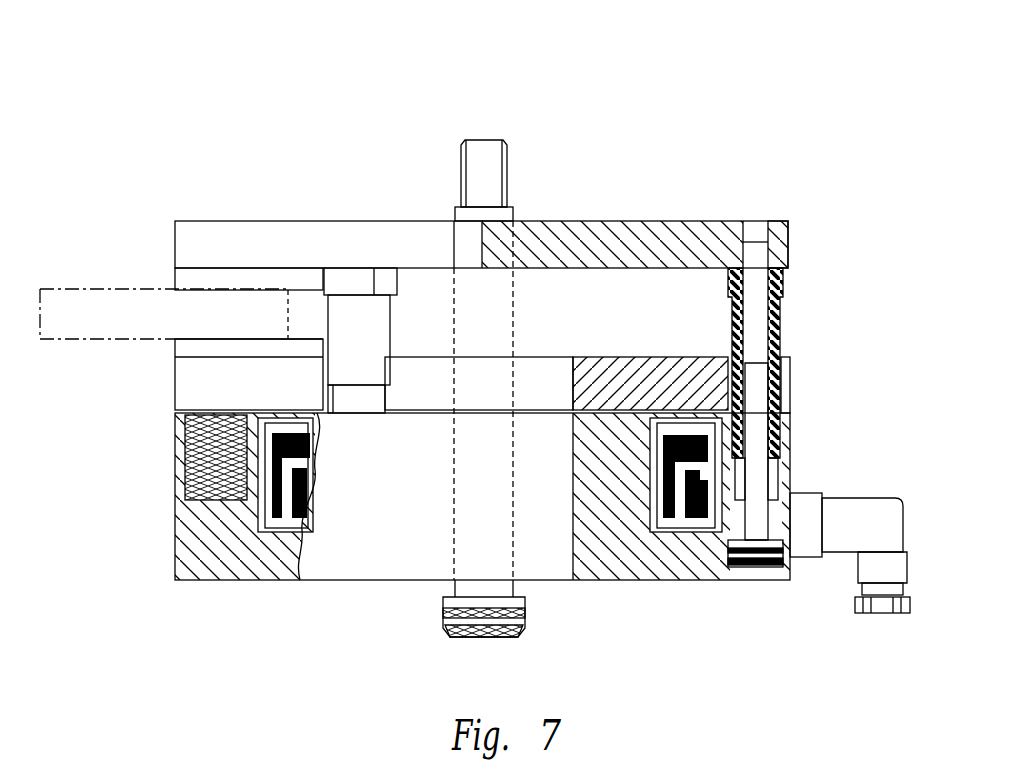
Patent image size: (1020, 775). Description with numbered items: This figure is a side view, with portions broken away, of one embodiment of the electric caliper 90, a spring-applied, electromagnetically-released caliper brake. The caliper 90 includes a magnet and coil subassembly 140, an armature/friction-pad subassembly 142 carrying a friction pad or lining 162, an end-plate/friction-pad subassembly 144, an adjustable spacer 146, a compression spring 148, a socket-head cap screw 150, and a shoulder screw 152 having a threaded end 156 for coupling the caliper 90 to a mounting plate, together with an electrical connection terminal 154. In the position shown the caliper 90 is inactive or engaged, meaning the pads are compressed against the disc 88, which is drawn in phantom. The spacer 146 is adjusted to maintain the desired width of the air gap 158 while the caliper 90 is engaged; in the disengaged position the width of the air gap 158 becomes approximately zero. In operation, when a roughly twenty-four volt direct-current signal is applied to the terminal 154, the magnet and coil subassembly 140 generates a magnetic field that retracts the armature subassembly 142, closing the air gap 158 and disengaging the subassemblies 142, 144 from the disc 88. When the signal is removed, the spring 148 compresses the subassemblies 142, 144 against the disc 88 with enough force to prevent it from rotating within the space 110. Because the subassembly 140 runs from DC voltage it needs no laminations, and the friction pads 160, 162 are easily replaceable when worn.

The disc 88 is at (134, 287).
The electric caliper 90 is at (646, 203).
The space 110 is at (317, 320).
The magnet and coil subassembly 140 is at (243, 568).
The armature/friction-pad subassembly 142 is at (162, 391).
The end-plate/friction-pad subassembly 144 is at (196, 206).
The adjustable spacer 146 is at (367, 307).
The compression spring 148 is at (195, 475).
The socket-head cap screw 150 is at (758, 482).
The shoulder screw 152 is at (540, 195).
The electrical connection terminal 154 is at (855, 605).
The threaded end 156 is at (507, 143).
The air gap 158 is at (788, 416).
The friction pad 160 is at (284, 275).
The friction pad or lining 162 is at (187, 347).